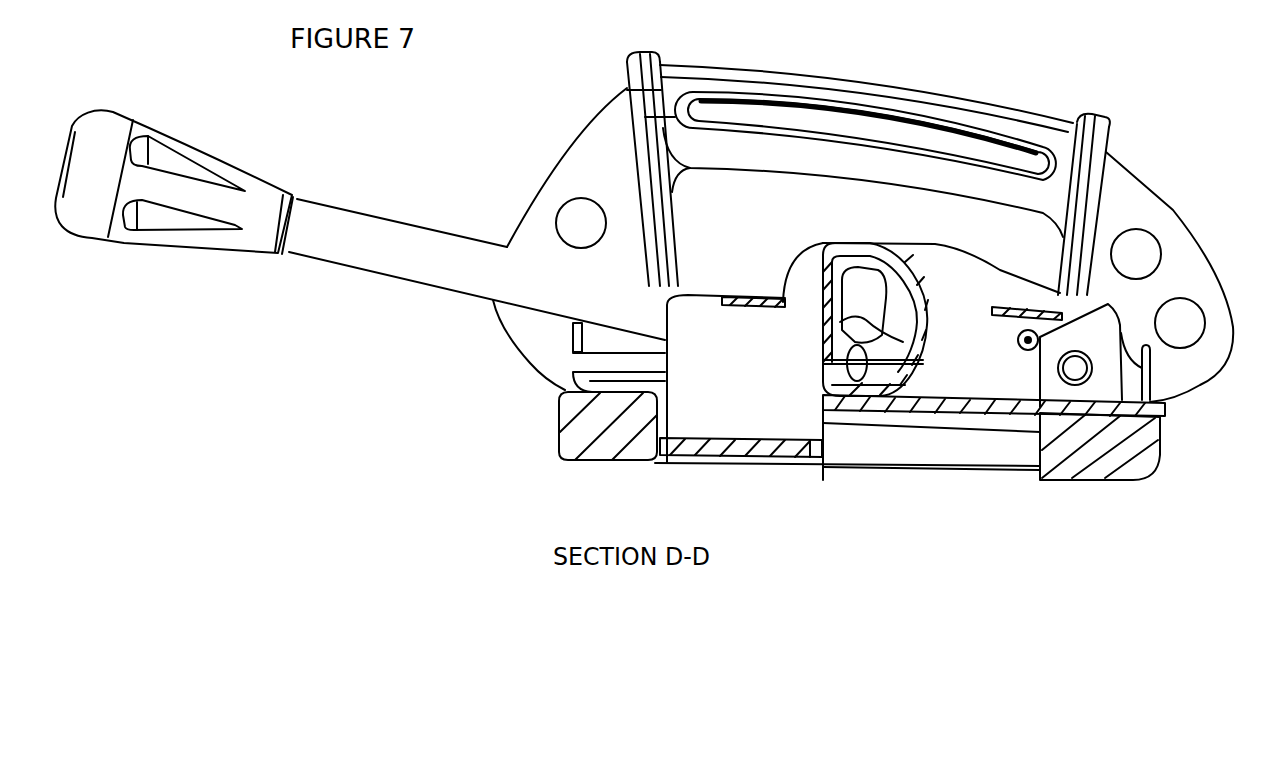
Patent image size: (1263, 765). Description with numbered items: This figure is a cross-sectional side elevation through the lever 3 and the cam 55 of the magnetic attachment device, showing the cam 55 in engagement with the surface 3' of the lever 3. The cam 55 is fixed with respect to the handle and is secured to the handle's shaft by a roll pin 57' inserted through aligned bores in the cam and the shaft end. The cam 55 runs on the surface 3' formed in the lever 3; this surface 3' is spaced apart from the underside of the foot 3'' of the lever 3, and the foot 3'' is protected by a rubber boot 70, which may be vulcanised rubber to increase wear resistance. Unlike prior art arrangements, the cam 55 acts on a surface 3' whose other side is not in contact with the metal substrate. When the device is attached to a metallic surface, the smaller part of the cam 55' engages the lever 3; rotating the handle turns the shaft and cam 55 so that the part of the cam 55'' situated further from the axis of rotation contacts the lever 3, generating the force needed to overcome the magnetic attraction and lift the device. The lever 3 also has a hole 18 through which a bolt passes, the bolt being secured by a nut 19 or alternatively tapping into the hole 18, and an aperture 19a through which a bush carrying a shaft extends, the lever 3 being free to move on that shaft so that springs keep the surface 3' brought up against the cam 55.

The release lever 3 is at (861, 426).
The surface 3' is at (994, 493).
The foot 3'' is at (765, 491).
The hole 18 is at (1040, 477).
The nut 19 is at (1038, 337).
The aperture 19a is at (1092, 372).
The cam 55 is at (888, 310).
The smaller part of the cam 55' is at (820, 380).
The part of the cam further from the axis 55'' is at (884, 274).
The roll pin 57' is at (896, 447).
The rubber boot 70 is at (740, 463).